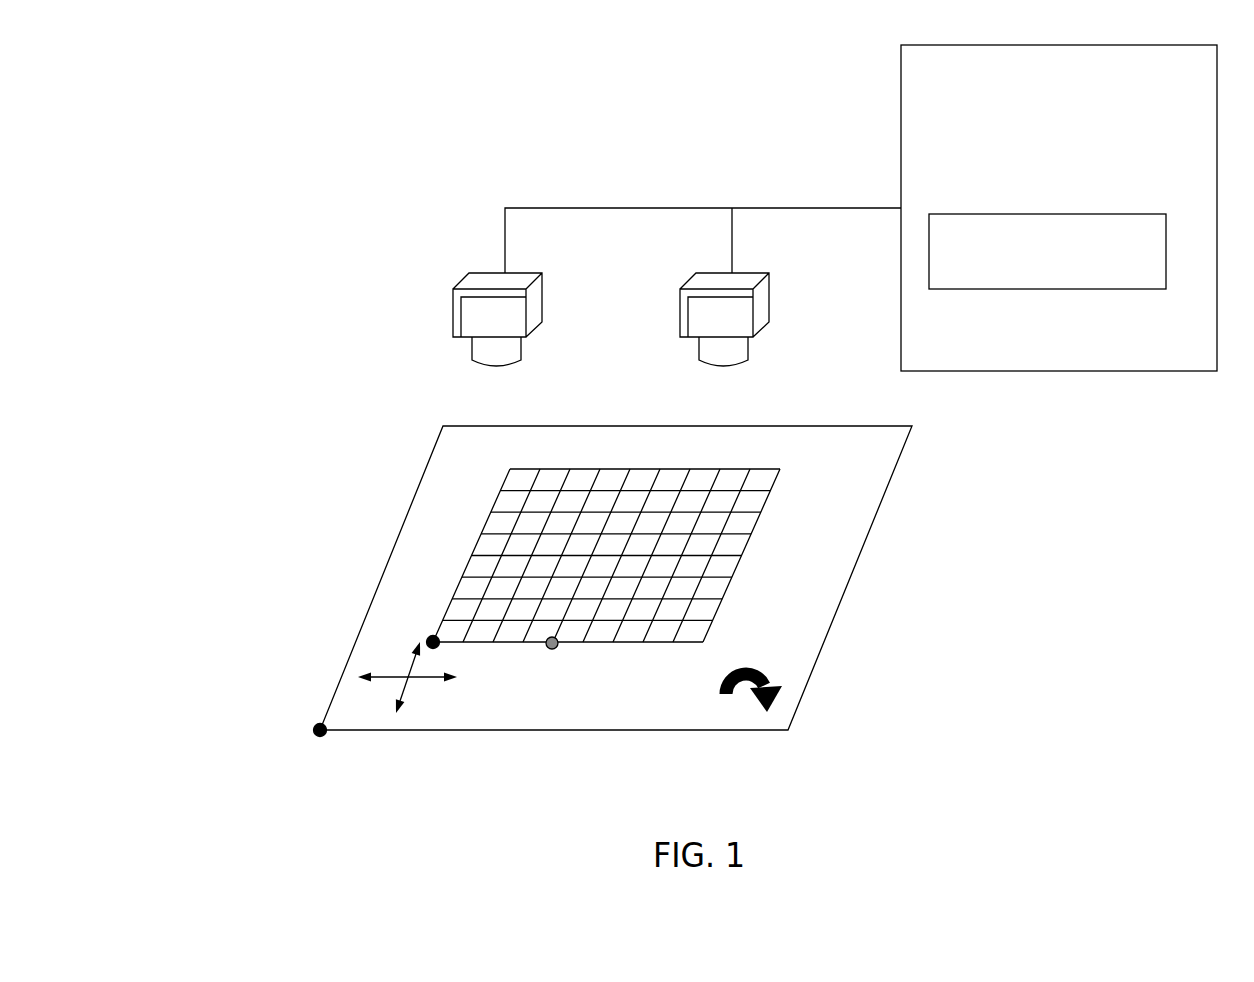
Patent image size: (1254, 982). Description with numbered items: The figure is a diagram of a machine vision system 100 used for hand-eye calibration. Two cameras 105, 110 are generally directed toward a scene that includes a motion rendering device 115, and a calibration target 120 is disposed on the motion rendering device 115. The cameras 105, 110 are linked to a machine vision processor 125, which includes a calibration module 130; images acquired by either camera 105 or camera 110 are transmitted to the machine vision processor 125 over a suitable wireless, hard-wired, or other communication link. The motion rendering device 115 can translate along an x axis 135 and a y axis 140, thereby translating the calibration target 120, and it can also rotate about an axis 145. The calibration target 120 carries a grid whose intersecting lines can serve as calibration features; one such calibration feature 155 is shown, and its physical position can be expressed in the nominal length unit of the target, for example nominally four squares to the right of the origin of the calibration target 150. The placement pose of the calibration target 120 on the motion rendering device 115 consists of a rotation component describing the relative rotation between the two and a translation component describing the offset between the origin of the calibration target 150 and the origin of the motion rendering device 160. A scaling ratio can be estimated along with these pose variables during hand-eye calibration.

The machine vision system 100 is at (335, 164).
The camera 105 is at (453, 323).
The camera 110 is at (680, 325).
The motion rendering device 115 is at (855, 528).
The calibration target 120 is at (558, 501).
The machine vision processor 125 is at (1059, 208).
The calibration module 130 is at (1047, 251).
The x axis 135 is at (377, 675).
The y axis 140 is at (415, 652).
The axis 145 is at (777, 695).
The origin of the calibration target 150 is at (428, 638).
The calibration feature 155 is at (556, 648).
The origin of the motion rendering device 160 is at (316, 726).